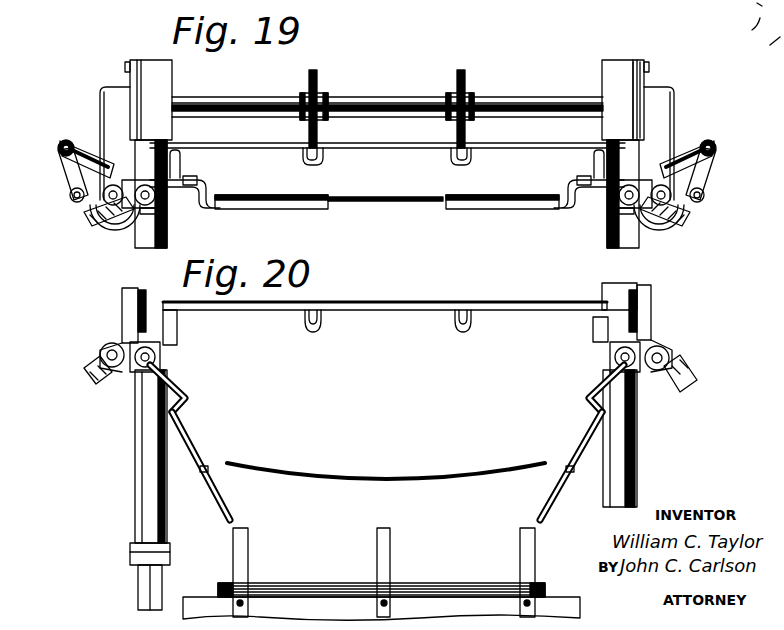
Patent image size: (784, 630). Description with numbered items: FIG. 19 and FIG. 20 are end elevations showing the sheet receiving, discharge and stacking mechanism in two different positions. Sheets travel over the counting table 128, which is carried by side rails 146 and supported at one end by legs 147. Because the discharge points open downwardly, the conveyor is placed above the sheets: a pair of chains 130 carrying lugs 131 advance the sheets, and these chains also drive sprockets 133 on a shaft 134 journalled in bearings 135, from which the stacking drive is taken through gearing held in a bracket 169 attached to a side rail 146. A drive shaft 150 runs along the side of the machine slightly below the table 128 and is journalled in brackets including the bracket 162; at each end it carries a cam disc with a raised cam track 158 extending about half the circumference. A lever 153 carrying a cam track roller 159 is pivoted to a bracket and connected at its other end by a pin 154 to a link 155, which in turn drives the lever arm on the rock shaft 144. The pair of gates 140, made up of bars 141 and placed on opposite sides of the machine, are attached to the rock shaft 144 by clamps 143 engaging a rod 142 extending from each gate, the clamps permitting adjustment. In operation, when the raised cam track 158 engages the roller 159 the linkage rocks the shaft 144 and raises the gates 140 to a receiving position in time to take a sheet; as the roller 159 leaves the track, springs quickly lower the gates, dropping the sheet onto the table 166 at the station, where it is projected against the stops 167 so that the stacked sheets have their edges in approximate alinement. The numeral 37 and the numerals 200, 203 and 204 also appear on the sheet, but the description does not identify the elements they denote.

In FIG. 19, the bar / slat 37 is at (382, 197).
In FIG. 20, the bar / slat 37 is at (400, 475).
In FIG. 19, the counting table 128 is at (508, 140).
In FIG. 20, the counting table 128 is at (408, 302).
In FIG. 19, the chains 130 is at (313, 70).
In FIG. 19, the lugs 131 is at (317, 150).
In FIG. 19, the sprockets 133 is at (322, 95).
In FIG. 19, the shaft 134 is at (388, 103).
In FIG. 19, the bearings 135 is at (165, 92).
In FIG. 19, the gates 140 is at (212, 208).
In FIG. 20, the gates 140 is at (200, 454).
In FIG. 19, the bars 141 is at (283, 197).
In FIG. 20, the bars 141 is at (190, 436).
In FIG. 19, the rod 142 is at (205, 182).
In FIG. 20, the rod 142 is at (182, 390).
In FIG. 19, the clamps 143 is at (180, 165).
In FIG. 20, the clamps 143 is at (165, 363).
In FIG. 19, the rock shaft 144 is at (155, 213).
In FIG. 20, the rock shaft 144 is at (140, 372).
In FIG. 19, the side rails 146 is at (617, 125).
In FIG. 20, the side rails 146 is at (607, 290).
In FIG. 19, the legs 147 is at (150, 240).
In FIG. 20, the legs 147 is at (145, 482).
In FIG. 19, the drive shaft 150 is at (100, 230).
In FIG. 20, the drive shaft 150 is at (100, 353).
In FIG. 19, the lever 153 is at (70, 170).
In FIG. 19, the pin 154 is at (60, 146).
In FIG. 19, the link 155 is at (83, 133).
In FIG. 19, the raised cam track 158 is at (115, 230).
In FIG. 19, the cam track roller 159 is at (70, 195).
In FIG. 19, the bracket 162 is at (92, 228).
In FIG. 20, the bracket 162 is at (85, 378).
In FIG. 20, the tables 166 is at (575, 605).
In FIG. 20, the stops 167 is at (378, 553).
In FIG. 19, the bracket 169 is at (111, 86).
In FIG. 20, the bracket 169 is at (122, 305).
In FIG. 19, the frame 200 is at (764, 48).
In FIG. 19, the member 203 is at (739, 31).
In FIG. 19, the member 204 is at (754, 8).